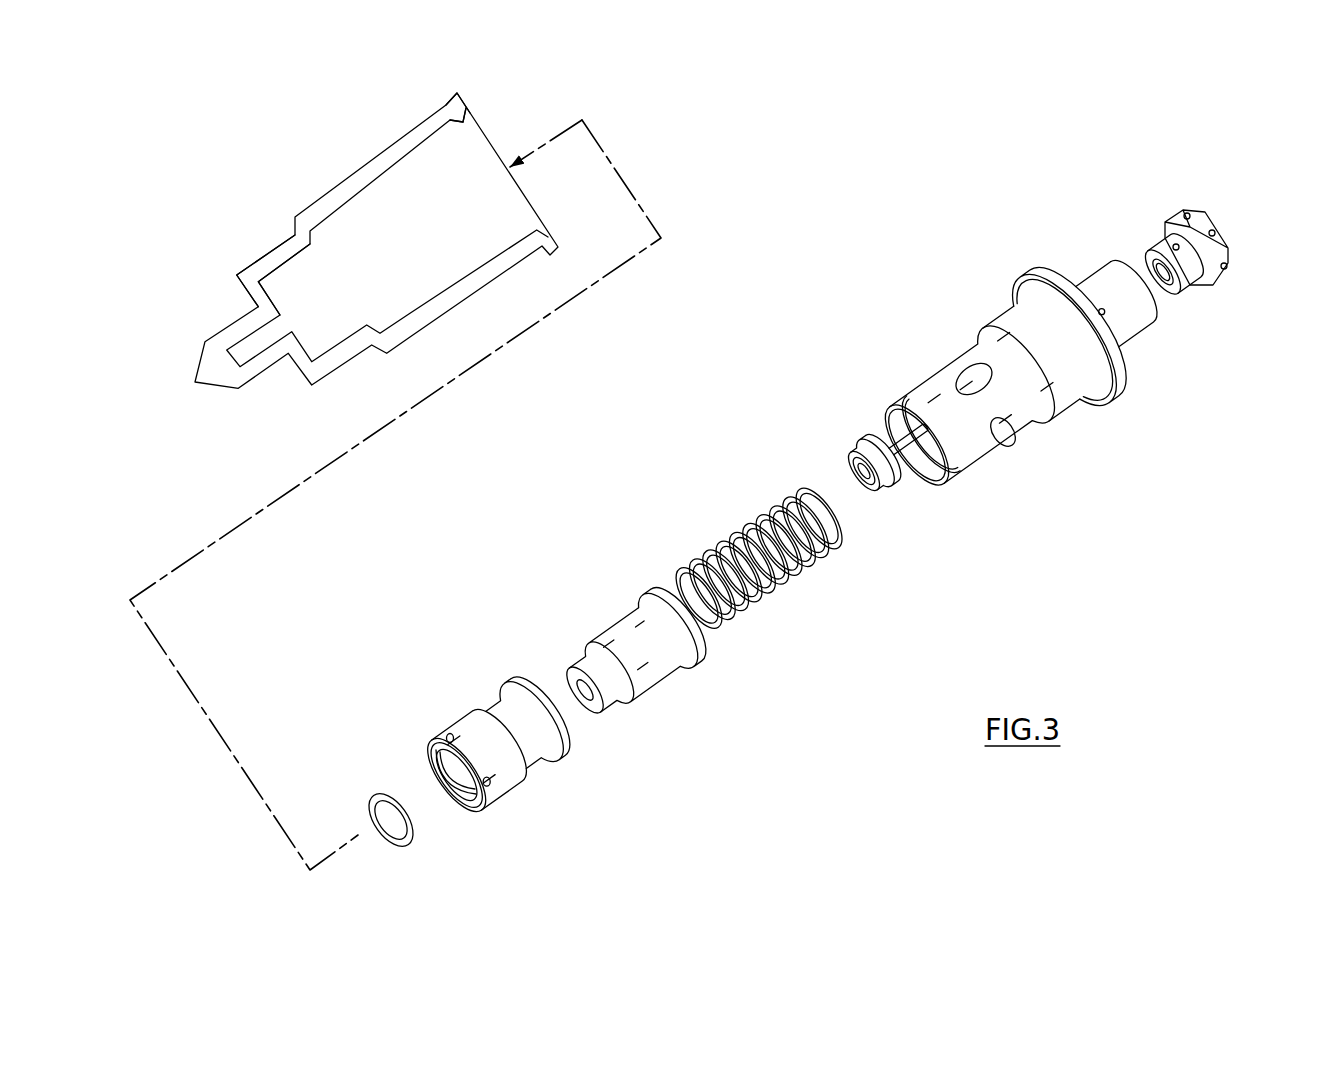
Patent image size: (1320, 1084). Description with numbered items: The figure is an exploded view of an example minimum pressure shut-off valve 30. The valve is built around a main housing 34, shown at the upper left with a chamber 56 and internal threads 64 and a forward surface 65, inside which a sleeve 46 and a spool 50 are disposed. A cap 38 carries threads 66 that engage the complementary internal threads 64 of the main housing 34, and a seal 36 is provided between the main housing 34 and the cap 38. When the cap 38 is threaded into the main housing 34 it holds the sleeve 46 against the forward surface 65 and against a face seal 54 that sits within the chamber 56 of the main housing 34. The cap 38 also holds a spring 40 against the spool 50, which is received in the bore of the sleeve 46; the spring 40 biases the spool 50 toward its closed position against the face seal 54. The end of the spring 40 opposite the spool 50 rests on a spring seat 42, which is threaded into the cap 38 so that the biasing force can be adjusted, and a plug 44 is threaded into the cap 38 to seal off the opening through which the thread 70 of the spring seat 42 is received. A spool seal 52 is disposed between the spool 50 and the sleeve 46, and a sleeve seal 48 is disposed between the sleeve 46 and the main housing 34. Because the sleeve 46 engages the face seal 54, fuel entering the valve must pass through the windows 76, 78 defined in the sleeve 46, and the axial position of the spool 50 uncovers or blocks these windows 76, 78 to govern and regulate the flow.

The shut-off valve 30 is at (1073, 194).
The main housing 34 is at (443, 303).
The seal 36 is at (1010, 295).
The cap 38 is at (1067, 413).
The spring 40 is at (755, 500).
The spring seat 42 is at (895, 510).
The plug 44 is at (1228, 283).
The sleeve 46 is at (510, 787).
The sleeve seal 48 is at (476, 697).
The spool 50 is at (668, 685).
The spool seal 52 is at (580, 640).
The face seal 54 is at (391, 858).
The chamber 56 is at (412, 254).
The internal threads 64 is at (442, 140).
The forward surface 65 is at (277, 300).
The threads 66 is at (1017, 327).
The thread 70 is at (883, 450).
The window 76 is at (449, 738).
The window 78 is at (462, 795).